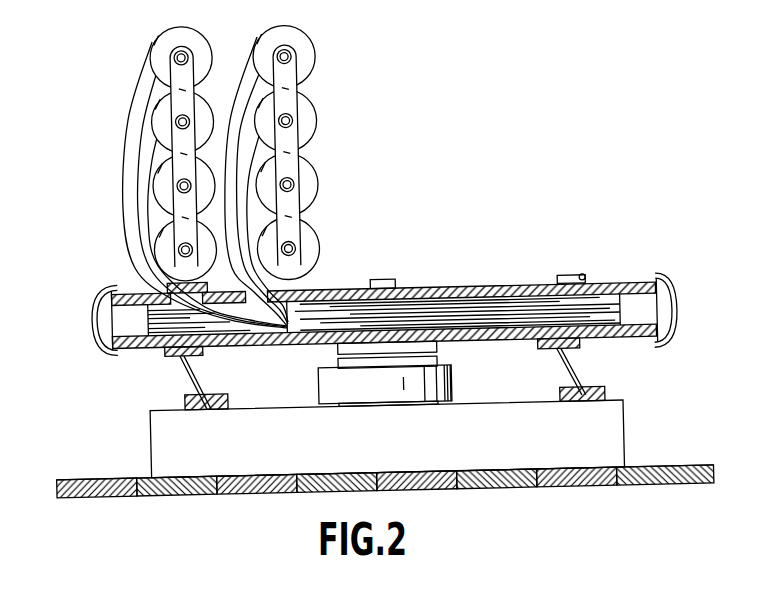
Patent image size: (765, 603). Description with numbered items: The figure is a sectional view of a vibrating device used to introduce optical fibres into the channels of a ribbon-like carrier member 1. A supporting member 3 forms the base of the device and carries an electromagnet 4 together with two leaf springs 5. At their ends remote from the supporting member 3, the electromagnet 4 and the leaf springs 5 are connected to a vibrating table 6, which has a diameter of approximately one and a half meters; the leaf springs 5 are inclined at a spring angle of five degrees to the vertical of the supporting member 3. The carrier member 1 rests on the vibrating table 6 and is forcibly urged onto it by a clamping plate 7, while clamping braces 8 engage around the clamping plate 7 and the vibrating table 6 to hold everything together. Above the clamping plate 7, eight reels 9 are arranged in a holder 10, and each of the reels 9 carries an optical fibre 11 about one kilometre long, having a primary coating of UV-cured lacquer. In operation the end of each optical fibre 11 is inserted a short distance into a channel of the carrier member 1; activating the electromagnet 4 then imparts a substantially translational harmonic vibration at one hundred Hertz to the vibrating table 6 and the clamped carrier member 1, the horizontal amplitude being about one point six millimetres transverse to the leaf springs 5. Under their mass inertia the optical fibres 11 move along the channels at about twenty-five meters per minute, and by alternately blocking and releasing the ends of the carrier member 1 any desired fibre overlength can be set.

The carrier member 1 is at (463, 312).
The supporting member 3 is at (175, 447).
The electromagnet 4 is at (330, 383).
The leaf springs 5 is at (194, 378).
The vibrating table 6 is at (611, 337).
The clamping plate 7 is at (616, 285).
The clamping braces 8 is at (385, 279).
The reels 9 is at (152, 46).
The holder 10 is at (177, 102).
The optical fibre 11 is at (123, 182).